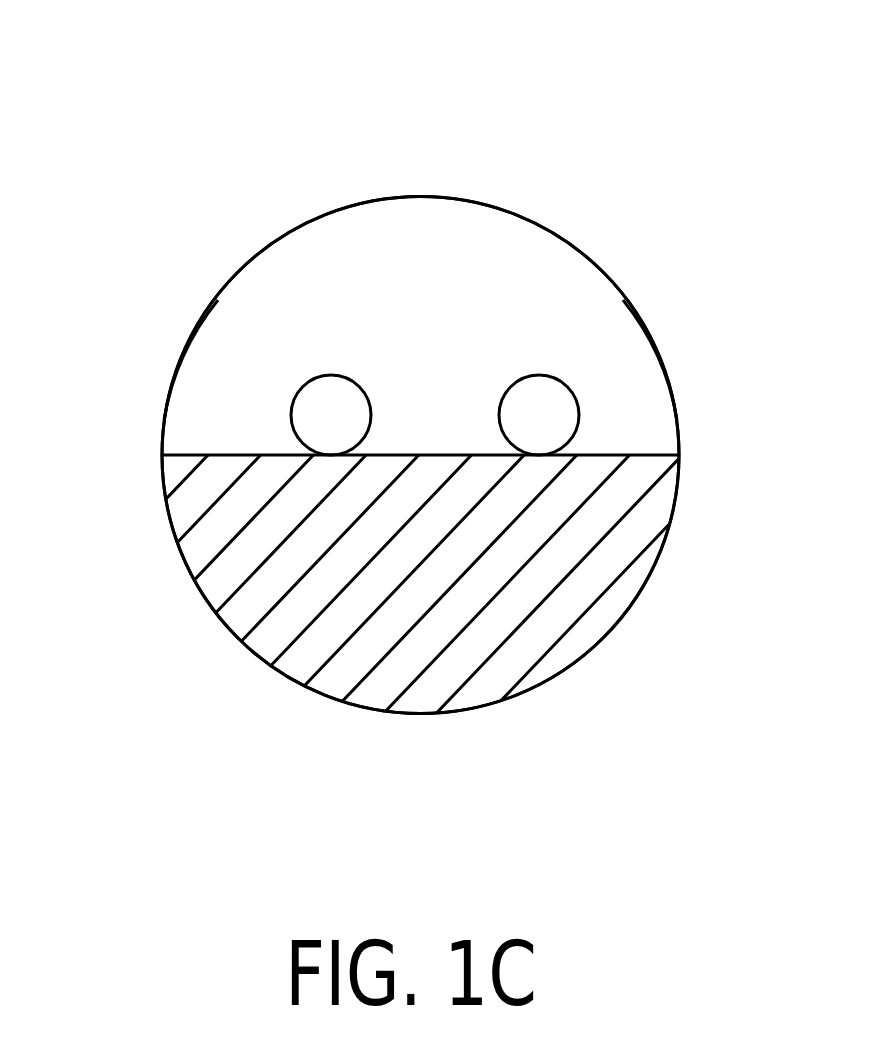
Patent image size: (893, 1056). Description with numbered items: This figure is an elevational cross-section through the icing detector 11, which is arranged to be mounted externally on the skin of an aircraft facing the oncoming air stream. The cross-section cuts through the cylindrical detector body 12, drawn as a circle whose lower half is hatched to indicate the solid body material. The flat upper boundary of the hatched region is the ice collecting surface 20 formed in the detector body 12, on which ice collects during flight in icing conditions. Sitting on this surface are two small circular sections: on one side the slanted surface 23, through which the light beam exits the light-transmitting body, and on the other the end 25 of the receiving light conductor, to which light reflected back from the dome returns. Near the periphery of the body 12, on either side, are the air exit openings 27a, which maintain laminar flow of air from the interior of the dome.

The detector 11 is at (661, 131).
The detector body 12 is at (163, 398).
The ice collecting surface 20 is at (415, 455).
The slanted surface 23 is at (553, 388).
The end of the receiving light conductor 25 is at (334, 390).
The air exit openings 27a is at (205, 345).